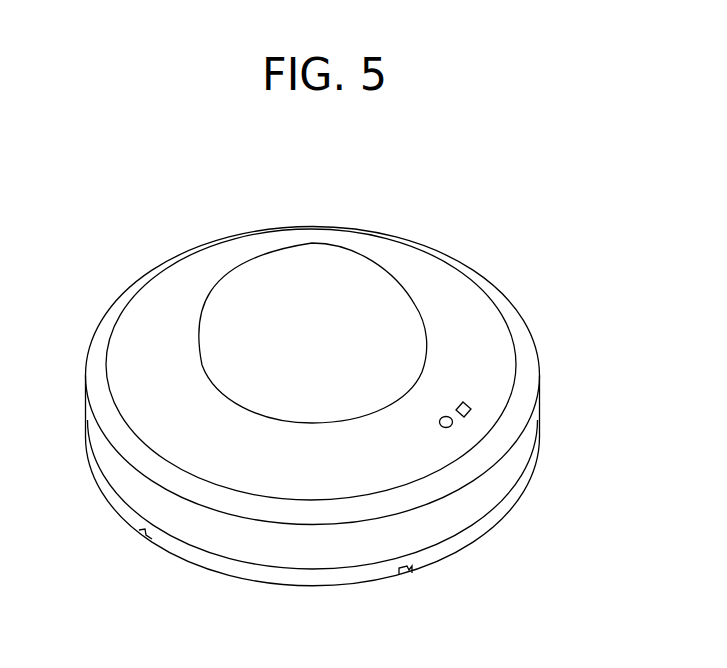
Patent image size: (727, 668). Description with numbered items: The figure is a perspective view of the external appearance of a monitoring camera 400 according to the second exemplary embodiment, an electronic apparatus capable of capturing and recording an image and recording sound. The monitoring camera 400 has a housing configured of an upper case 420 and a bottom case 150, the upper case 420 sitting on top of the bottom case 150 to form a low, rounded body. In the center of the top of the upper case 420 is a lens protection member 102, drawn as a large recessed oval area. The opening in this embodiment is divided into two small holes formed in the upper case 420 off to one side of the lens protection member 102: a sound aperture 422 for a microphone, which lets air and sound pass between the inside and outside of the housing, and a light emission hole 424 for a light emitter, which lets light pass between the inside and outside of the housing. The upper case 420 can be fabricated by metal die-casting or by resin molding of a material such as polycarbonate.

The monitoring camera 400 is at (333, 373).
The lens protection member 102 is at (274, 265).
The upper case 420 is at (457, 303).
The sound aperture 422 is at (471, 409).
The light emission hole 424 is at (451, 427).
The bottom case 150 is at (127, 518).